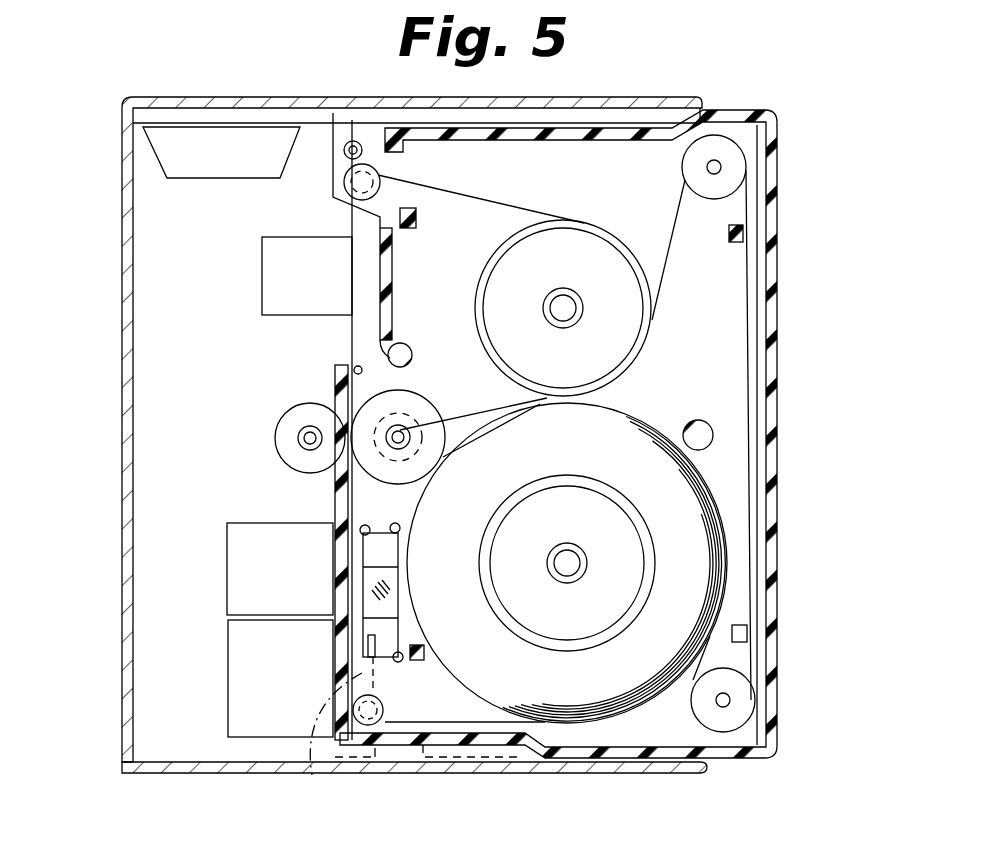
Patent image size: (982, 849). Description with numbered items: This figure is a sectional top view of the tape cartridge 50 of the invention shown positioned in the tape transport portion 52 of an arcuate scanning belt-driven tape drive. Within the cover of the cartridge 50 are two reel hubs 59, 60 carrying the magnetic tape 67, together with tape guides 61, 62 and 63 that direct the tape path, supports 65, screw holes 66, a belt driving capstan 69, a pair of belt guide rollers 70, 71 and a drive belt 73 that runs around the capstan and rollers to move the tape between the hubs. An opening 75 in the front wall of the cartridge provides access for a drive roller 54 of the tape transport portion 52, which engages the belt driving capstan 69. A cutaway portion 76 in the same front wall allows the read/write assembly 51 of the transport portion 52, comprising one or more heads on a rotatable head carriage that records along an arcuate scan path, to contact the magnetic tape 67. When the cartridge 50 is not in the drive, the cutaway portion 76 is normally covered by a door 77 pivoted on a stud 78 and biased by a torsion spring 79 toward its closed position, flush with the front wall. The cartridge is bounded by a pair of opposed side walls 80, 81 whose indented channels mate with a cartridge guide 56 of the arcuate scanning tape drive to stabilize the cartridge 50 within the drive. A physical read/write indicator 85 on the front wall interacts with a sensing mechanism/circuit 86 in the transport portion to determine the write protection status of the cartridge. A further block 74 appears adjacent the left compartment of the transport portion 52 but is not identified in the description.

The tape cartridge 50 is at (722, 358).
The read/write assembly 51 is at (272, 285).
The tape transport portion 52 is at (224, 478).
The drive roller 54 is at (305, 455).
The cartridge guide 56 is at (608, 122).
The reel hub 59 is at (655, 550).
The reel hub 60 is at (627, 362).
The tape guide 61 is at (378, 177).
The tape guide 62 is at (378, 348).
The tape guide 63 is at (360, 735).
The support 65 is at (416, 218).
The screw hole 66 is at (402, 343).
The tape 67 is at (593, 185).
The belt driving capstan 69 is at (410, 412).
The belt guide roller 70 is at (722, 172).
The belt guide roller 71 is at (735, 700).
The drive belt 73 is at (660, 274).
The component block 74 is at (240, 545).
The opening 75 is at (340, 407).
The cutaway portion 76 is at (372, 236).
The door 77 is at (177, 133).
The stud 78 is at (346, 153).
The torsion spring 79 is at (354, 140).
The side wall 80 is at (652, 135).
The side wall 81 is at (688, 762).
The physical read/write indicator 85 is at (312, 775).
The sensing mechanism/circuit 86 is at (240, 672).